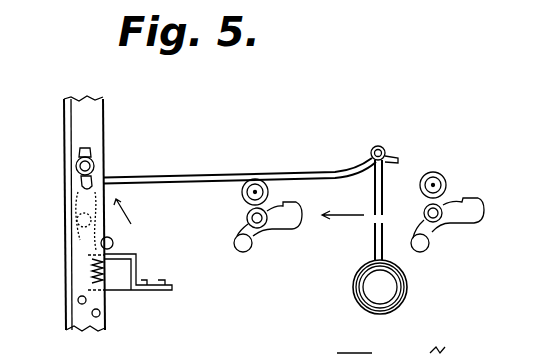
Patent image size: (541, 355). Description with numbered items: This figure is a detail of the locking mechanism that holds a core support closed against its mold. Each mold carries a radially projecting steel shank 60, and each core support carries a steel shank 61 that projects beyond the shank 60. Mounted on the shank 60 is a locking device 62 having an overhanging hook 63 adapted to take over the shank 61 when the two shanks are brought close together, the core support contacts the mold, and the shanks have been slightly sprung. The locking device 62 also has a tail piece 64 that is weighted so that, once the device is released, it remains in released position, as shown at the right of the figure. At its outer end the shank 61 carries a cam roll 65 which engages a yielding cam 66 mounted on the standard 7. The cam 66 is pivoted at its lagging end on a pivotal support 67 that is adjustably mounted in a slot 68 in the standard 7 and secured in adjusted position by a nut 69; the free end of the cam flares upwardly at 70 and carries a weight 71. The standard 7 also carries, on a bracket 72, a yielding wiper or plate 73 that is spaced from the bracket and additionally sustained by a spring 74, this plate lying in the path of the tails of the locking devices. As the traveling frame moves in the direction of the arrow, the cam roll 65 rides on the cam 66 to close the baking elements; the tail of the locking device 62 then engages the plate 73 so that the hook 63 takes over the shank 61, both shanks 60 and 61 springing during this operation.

The standard 7 is at (105, 100).
The steel shank 60 is at (424, 213).
The steel shank 61 is at (443, 178).
The locking device 62 is at (443, 228).
The overhanging hook 63 is at (467, 199).
The tail piece 64 is at (424, 252).
The cam roll 65 is at (432, 172).
The cam 66 is at (200, 177).
The pivotal support 67 is at (76, 166).
The slot 68 is at (82, 151).
The nut 69 is at (103, 168).
The upwardly flaring free end 70 is at (370, 165).
The weight 71 is at (372, 281).
The bracket 72 is at (118, 291).
The yielding wiper or plate 73 is at (120, 253).
The spring 74 is at (92, 272).